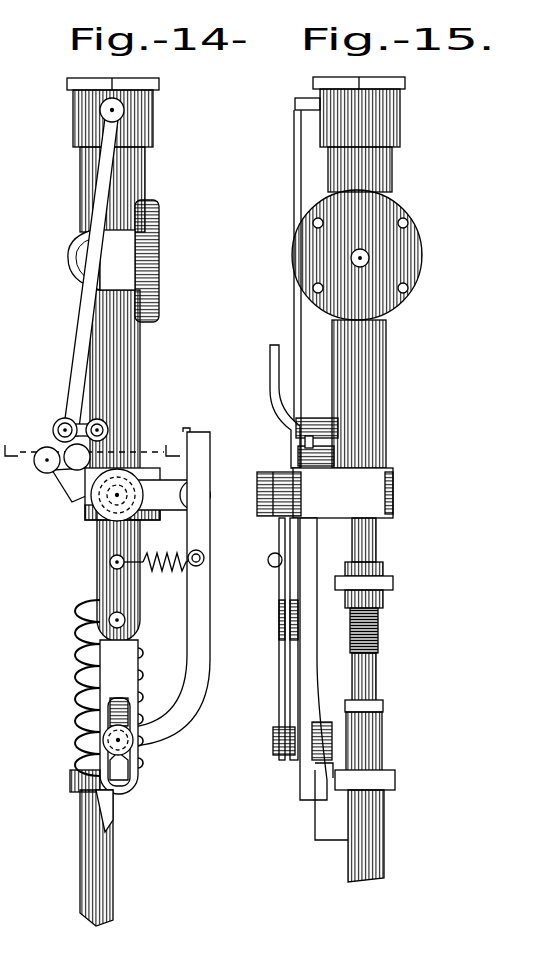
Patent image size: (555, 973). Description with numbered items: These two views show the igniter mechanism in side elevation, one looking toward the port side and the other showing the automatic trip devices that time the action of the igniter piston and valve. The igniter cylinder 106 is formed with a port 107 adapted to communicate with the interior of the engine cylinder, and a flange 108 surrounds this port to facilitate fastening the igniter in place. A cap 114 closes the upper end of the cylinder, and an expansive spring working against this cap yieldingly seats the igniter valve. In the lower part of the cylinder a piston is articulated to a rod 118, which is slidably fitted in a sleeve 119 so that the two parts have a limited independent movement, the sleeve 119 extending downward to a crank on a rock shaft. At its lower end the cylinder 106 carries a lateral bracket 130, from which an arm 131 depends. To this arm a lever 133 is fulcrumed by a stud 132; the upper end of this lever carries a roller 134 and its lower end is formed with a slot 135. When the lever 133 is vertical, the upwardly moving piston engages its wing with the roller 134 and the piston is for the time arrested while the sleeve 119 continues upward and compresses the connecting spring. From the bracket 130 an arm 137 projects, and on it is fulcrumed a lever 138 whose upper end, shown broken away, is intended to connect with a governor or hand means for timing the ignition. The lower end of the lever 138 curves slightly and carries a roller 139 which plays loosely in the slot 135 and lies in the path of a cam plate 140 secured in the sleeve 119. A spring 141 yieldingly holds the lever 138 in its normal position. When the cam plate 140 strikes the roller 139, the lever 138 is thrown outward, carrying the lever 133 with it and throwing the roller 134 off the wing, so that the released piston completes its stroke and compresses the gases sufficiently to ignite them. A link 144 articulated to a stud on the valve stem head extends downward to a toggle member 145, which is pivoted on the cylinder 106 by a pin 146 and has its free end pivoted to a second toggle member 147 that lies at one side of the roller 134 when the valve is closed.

In FIG. 14, the igniter cylinder 106 is at (125, 388).
In FIG. 15, the igniter cylinder 106 is at (370, 348).
In FIG. 15, the port 107 is at (366, 259).
In FIG. 14, the flange 108 is at (150, 232).
In FIG. 15, the flange 108 is at (412, 243).
In FIG. 14, the cap 114 is at (150, 128).
In FIG. 15, the cap 114 is at (398, 112).
In FIG. 15, the rod 118 is at (368, 668).
In FIG. 14, the sleeve 119 is at (105, 868).
In FIG. 15, the sleeve 119 is at (375, 840).
In FIG. 15, the lateral bracket 130 is at (343, 493).
In FIG. 14, the arm 131 is at (110, 583).
In FIG. 15, the arm 131 is at (290, 587).
In FIG. 14, the stud 132 is at (112, 621).
In FIG. 14, the lever 133 is at (111, 688).
In FIG. 14, the roller 134 is at (82, 512).
In FIG. 14, the slot 135 is at (130, 758).
In FIG. 14, the arm 137 is at (165, 487).
In FIG. 15, the arm 137 is at (272, 490).
In FIG. 14, the lever 138 is at (200, 578).
In FIG. 15, the lever 138 is at (290, 593).
In FIG. 14, the roller 139 is at (135, 730).
In FIG. 15, the roller 139 is at (312, 722).
In FIG. 14, the cam plate 140 is at (118, 800).
In FIG. 14, the spring 141 is at (160, 576).
In FIG. 14, the link 144 is at (72, 377).
In FIG. 14, the toggle member 145 is at (55, 442).
In FIG. 14, the pin 146 is at (100, 430).
In FIG. 14, the second toggle member 147 is at (50, 466).